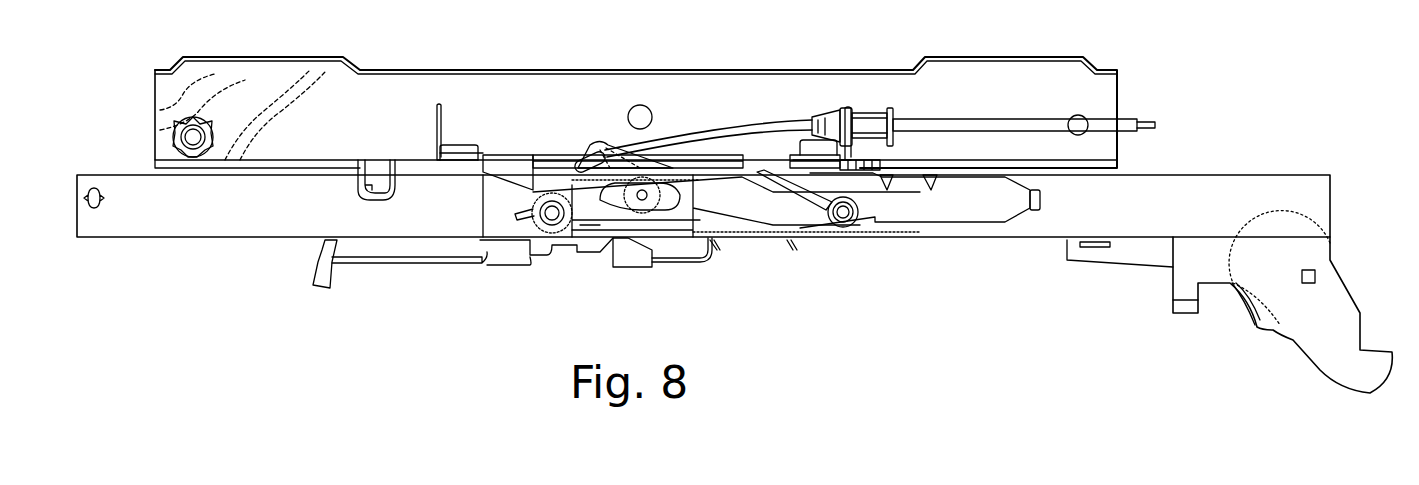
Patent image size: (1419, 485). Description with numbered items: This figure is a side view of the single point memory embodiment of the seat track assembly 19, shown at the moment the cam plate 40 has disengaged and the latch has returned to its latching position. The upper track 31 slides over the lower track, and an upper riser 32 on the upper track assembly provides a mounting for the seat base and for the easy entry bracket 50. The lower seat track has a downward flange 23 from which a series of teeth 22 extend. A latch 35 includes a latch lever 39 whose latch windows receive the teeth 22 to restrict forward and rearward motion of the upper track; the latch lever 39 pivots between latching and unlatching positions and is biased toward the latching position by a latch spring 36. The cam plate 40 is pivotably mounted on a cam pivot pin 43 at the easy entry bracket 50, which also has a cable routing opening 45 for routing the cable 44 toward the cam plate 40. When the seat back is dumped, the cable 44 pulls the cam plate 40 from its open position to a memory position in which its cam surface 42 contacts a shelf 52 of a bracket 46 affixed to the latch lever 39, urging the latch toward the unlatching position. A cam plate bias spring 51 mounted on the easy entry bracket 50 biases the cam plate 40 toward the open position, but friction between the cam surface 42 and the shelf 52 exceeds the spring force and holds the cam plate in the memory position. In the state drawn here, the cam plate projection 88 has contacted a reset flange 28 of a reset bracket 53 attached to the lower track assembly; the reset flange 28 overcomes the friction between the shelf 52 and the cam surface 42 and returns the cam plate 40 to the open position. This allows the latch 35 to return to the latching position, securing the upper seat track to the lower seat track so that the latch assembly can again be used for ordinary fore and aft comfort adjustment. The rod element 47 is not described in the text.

The seat track assembly 19 is at (1192, 160).
The teeth 22 is at (727, 217).
The downward flange 23 is at (490, 222).
The reset flange 28 is at (632, 253).
The upper track 31 is at (1250, 178).
The upper riser 32 is at (352, 121).
The latch 35 is at (1003, 210).
The latch spring 36 is at (807, 193).
The latch lever 39 is at (768, 203).
The cam plate 40 is at (603, 137).
The cam surface 42 is at (687, 223).
The cam pivot pin 43 is at (640, 200).
The cable 44 is at (677, 135).
The cable routing opening 45 is at (595, 157).
The bracket 46 is at (570, 240).
The rod 47 is at (1007, 123).
The easy entry bracket 50 is at (508, 157).
The cam plate bias spring 51 is at (632, 147).
The shelf 52 is at (593, 242).
The reset bracket 53 is at (703, 263).
The cam plate projection 88 is at (683, 192).